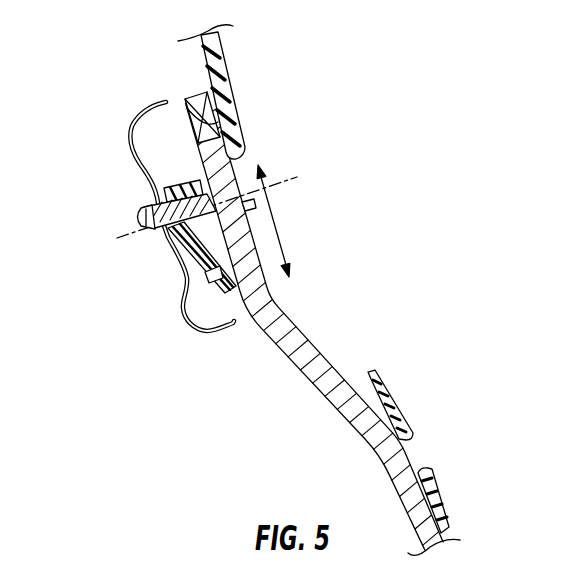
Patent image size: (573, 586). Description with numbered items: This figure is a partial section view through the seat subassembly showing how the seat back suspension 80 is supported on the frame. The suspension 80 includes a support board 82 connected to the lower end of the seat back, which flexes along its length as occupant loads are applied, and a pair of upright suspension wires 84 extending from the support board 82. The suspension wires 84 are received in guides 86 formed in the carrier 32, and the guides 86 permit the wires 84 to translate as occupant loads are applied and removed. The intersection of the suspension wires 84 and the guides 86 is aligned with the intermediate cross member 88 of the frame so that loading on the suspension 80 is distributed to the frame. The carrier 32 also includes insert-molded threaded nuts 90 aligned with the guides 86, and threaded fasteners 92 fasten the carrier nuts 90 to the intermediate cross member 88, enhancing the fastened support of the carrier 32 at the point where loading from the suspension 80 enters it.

The carrier 32 is at (221, 53).
The seat back suspension 80 is at (403, 398).
The support board 82 is at (432, 483).
The suspension wires 84 is at (333, 377).
The guides 86 is at (188, 100).
The intermediate cross member 88 is at (130, 135).
The insert-molded threaded nuts 90 is at (165, 196).
The threaded fasteners 92 is at (143, 212).